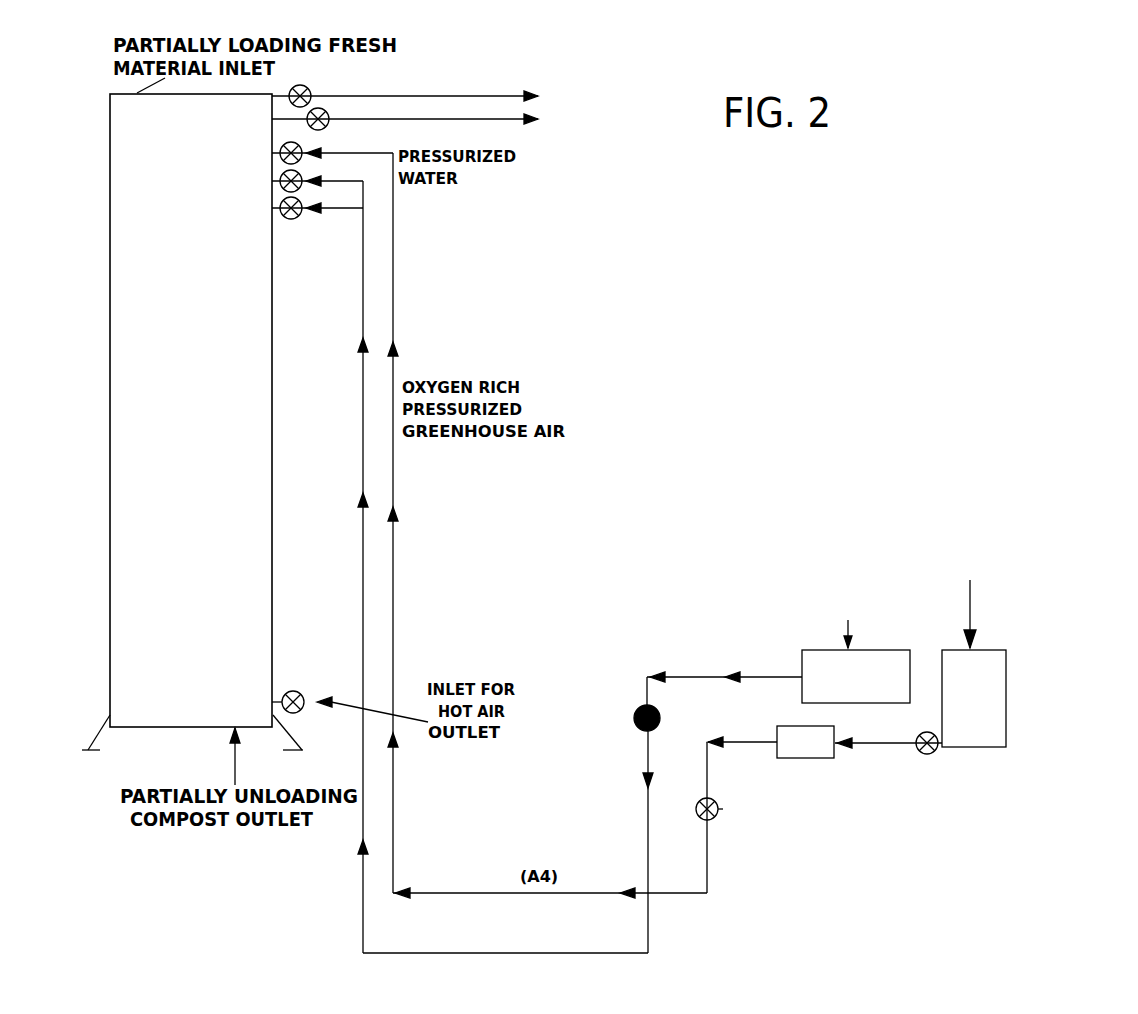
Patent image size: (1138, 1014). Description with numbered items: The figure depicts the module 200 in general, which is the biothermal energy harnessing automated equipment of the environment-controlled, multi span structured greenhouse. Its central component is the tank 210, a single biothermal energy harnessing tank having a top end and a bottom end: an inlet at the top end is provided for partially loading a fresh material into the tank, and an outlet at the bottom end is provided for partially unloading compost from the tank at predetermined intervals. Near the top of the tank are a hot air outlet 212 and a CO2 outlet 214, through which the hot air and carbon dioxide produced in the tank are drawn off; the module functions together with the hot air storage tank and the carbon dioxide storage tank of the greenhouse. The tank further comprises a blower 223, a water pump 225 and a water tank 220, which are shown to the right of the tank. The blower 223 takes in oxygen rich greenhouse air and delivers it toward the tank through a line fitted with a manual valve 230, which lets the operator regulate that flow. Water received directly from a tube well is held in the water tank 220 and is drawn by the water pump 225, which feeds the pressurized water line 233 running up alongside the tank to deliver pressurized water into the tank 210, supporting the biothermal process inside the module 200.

The module (A4) in general 200 is at (806, 293).
The tank of (A4) 210 is at (273, 510).
The hot air outlet 212 is at (433, 92).
The CO2 outlet 214 is at (433, 118).
The water tank of (A4) 220 is at (1007, 718).
The blower of (A4) 223 is at (818, 552).
The water pump of (A4) 225 is at (777, 733).
The manual valve 230 is at (640, 705).
The pressurized water line 233 is at (430, 299).